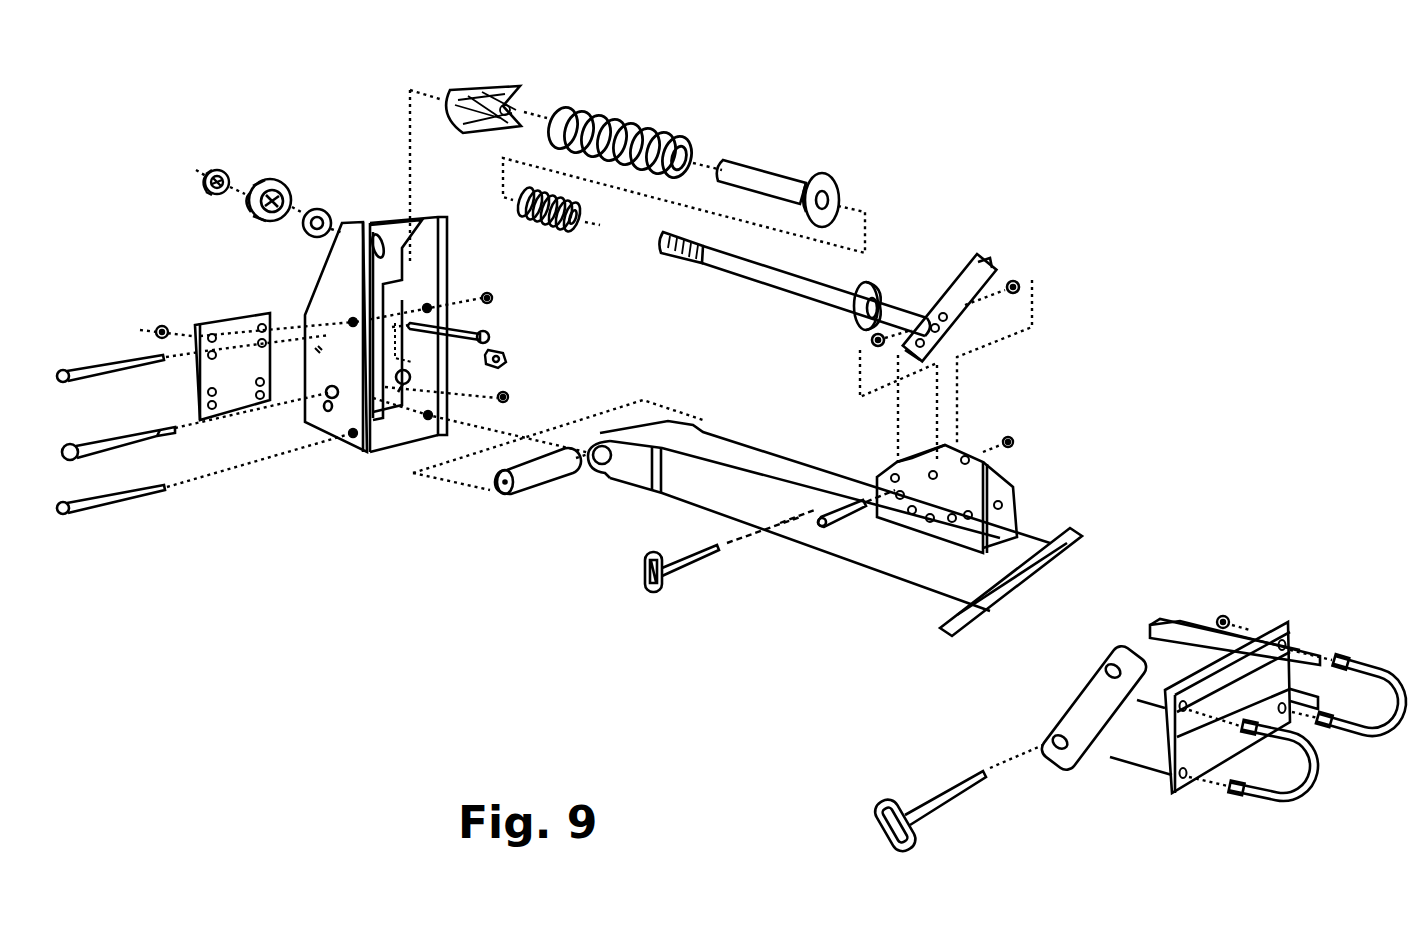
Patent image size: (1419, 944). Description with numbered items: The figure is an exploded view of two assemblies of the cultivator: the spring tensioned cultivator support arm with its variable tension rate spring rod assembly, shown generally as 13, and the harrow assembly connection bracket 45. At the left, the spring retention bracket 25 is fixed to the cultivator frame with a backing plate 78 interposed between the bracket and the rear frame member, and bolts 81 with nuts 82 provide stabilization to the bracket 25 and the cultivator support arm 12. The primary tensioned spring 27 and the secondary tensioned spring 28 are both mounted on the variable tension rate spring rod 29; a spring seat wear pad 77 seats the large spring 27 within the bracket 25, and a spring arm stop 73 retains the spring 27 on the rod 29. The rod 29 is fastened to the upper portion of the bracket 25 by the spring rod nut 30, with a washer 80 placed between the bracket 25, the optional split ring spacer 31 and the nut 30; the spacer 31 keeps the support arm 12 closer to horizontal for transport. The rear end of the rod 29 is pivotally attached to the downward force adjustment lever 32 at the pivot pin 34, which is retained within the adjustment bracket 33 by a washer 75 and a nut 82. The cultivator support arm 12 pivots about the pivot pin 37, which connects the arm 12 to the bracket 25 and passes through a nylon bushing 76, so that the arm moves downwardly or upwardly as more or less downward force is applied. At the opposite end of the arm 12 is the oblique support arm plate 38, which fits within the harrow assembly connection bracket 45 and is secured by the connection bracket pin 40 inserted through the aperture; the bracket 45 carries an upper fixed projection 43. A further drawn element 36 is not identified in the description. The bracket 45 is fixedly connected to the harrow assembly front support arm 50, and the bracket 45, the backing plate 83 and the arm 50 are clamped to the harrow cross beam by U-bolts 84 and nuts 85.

The cultivator support arm 12 is at (915, 582).
The tensioned spring assembly 13 is at (852, 136).
The spring retention bracket 25 is at (348, 455).
The primary tensioned spring 27 is at (614, 118).
The secondary tensioned spring 28 is at (540, 228).
The variable tension rate spring rod 29 is at (768, 290).
The spring rod nut 30 is at (225, 170).
The split ring tension block or spacer 31 is at (285, 180).
The downward force adjustment lever 32 is at (975, 265).
The adjustment bracket 33 is at (967, 532).
The pivot pin 34 is at (840, 522).
The T-handle pin 36 is at (687, 572).
The pivot pin 37 is at (98, 447).
The oblique support arm plate 38 is at (1000, 598).
The connection bracket pin 40 is at (957, 800).
The upper fixed projection 43 is at (1140, 655).
The harrow assembly connection bracket 45 is at (1046, 704).
The harrow assembly front support arm 50 is at (1135, 745).
The spring arm stop 73 is at (752, 163).
The washer 75 is at (1020, 282).
The nylon bushing 76 is at (535, 492).
The spring seat wear pad 77 is at (474, 92).
The backing plate 78 is at (230, 312).
The washer 80 is at (320, 207).
The bolts 81 is at (90, 365).
The nuts 82 is at (167, 325).
The harrow assembly connection bracket backing plate 83 is at (1290, 622).
The U-bolts 84 is at (1317, 775).
The nuts 85 is at (1225, 612).